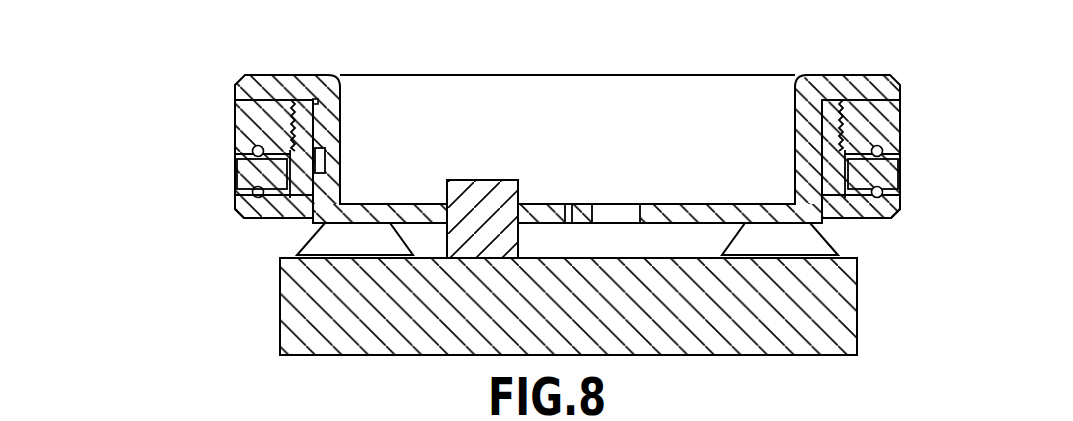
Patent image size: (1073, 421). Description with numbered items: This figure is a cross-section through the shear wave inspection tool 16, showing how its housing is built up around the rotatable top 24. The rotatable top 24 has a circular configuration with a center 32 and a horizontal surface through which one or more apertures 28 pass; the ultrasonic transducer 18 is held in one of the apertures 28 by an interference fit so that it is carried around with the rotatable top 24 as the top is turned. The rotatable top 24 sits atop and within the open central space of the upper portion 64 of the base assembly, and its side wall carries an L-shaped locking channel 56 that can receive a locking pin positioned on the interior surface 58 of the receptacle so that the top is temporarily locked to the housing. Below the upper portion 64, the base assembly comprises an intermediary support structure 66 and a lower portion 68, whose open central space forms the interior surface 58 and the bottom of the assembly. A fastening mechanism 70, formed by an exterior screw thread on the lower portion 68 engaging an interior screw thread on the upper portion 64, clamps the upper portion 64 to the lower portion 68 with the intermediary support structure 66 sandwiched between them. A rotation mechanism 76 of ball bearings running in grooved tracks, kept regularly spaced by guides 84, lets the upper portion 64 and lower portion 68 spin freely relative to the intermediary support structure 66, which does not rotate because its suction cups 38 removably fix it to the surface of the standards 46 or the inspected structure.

The shear wave inspection tool 16 is at (912, 121).
The ultrasonic transducer 18 is at (478, 190).
The rotatable top 24 is at (297, 86).
The aperture 28 is at (623, 215).
The center 32 is at (572, 213).
The suction cup 38 is at (330, 245).
The standard 46 is at (295, 318).
The L-shaped locking channel 56 is at (326, 152).
The interior surface 58 is at (317, 110).
The upper portion 64 is at (240, 107).
The intermediary support structure 66 is at (240, 174).
The lower portion 68 is at (248, 210).
The fastening mechanism 70 is at (292, 125).
The rotation mechanism 76 is at (897, 155).
The guide 84 is at (237, 153).